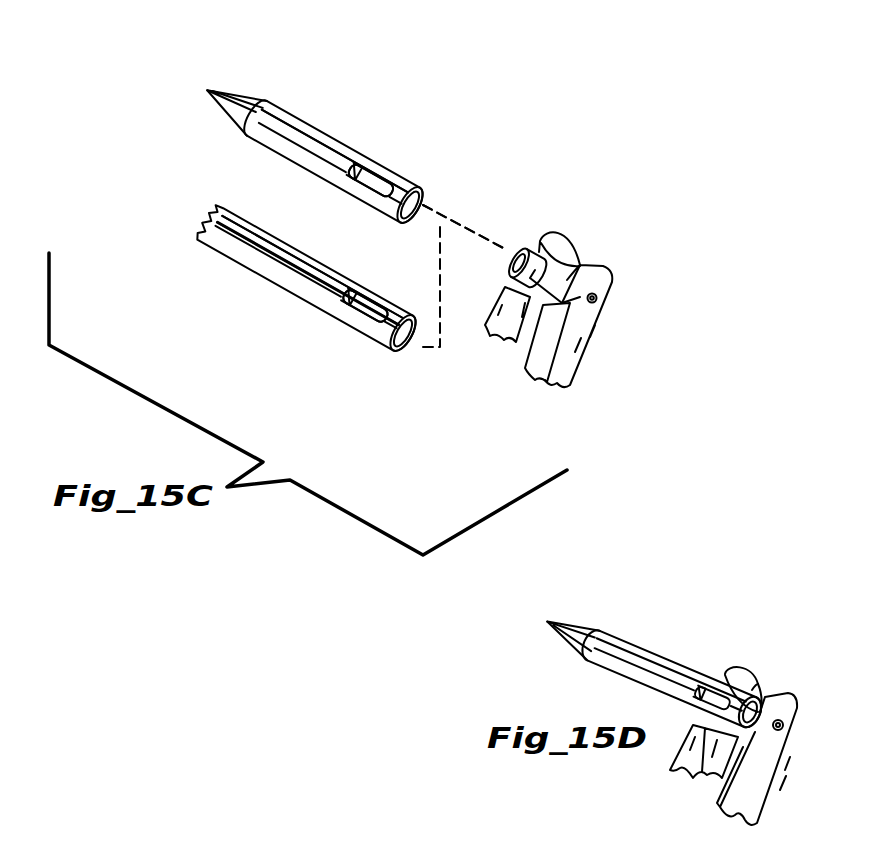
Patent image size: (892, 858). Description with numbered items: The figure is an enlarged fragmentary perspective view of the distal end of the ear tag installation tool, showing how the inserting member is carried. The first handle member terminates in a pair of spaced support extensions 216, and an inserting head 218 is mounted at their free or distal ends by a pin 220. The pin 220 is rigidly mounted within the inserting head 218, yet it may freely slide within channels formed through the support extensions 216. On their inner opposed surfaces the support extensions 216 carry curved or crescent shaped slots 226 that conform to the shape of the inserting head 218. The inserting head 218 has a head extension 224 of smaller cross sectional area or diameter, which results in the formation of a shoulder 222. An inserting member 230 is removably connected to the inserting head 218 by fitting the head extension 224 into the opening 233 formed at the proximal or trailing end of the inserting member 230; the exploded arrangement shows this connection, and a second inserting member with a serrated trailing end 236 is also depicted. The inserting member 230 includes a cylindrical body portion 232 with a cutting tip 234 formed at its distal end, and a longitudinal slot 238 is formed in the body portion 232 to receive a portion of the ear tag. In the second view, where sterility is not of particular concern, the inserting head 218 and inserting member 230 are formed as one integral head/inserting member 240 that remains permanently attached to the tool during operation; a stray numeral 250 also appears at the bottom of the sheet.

In FIG. 15C, the support extensions 216 is at (522, 322).
In FIG. 15D, the support extensions 216 is at (703, 760).
In FIG. 15C, the inserting head 218 is at (585, 268).
In FIG. 15D, the inserting head 218 is at (757, 759).
In FIG. 15C, the pin 220 is at (598, 302).
In FIG. 15D, the pin 220 is at (843, 665).
In FIG. 15C, the shoulder 222 is at (563, 275).
In FIG. 15D, the shoulder 222 is at (743, 690).
In FIG. 15C, the head extension 224 is at (521, 248).
In FIG. 15C, the crescent shaped slots 226 is at (567, 280).
In FIG. 15D, the crescent shaped slots 226 is at (788, 627).
In FIG. 15C, the inserting member 230 is at (307, 88).
In FIG. 15C, the cylindrical body portion 232 is at (370, 153).
In FIG. 15C, the opening 233 is at (447, 188).
In FIG. 15C, the cutting tip 234 is at (262, 52).
In FIG. 15C, the serrated proximal end of needle 236 is at (203, 228).
In FIG. 15C, the longitudinal slot 238 is at (333, 150).
In FIG. 15D, the head/inserting member 240 is at (670, 628).
In FIG. 15D, the reference numeral 250 is at (326, 855).